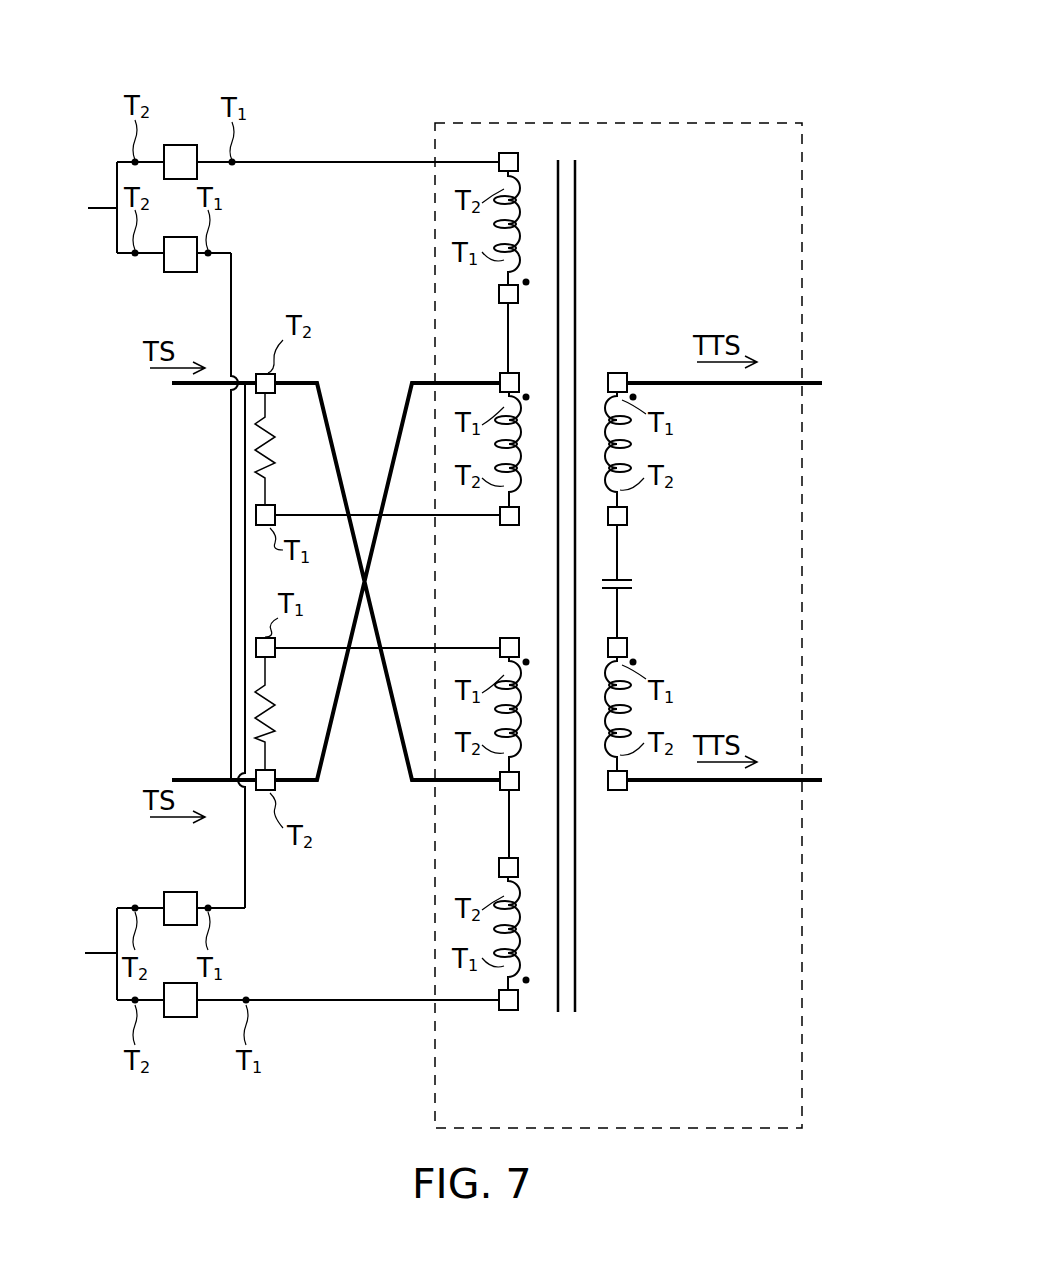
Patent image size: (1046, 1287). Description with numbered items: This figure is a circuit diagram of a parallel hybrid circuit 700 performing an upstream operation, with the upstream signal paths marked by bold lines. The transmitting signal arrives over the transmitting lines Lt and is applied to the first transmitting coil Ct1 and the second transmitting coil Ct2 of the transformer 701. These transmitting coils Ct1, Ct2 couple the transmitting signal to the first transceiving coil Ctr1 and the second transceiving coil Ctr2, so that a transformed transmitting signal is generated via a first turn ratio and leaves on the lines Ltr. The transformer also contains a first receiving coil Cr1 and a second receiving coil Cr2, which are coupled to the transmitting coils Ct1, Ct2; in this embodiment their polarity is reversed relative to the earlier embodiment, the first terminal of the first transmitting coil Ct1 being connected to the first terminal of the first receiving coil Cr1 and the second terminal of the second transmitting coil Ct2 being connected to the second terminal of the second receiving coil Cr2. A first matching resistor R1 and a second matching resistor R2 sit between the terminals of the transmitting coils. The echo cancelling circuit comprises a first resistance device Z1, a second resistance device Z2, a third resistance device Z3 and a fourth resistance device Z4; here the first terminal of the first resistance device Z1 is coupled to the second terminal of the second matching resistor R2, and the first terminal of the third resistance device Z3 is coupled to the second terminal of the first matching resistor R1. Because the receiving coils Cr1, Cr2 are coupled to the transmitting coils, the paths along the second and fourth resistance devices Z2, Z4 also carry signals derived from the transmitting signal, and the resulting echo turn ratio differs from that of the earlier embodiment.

The parallel hybrid circuit 700 is at (748, 90).
The transformer 701 is at (620, 123).
The first resistance device Z1 is at (193, 237).
The second resistance device Z2 is at (182, 145).
The third resistance device Z3 is at (193, 925).
The fourth resistance device Z4 is at (182, 1017).
The first matching resistor R1 is at (282, 449).
The second matching resistor R2 is at (282, 714).
The first receiving coil Cr1 is at (526, 268).
The second receiving coil Cr2 is at (526, 972).
The first transmitting coil Ct1 is at (526, 481).
The second transmitting coil Ct2 is at (526, 748).
The first transceiving coil Ctr1 is at (636, 447).
The second transceiving coil Ctr2 is at (636, 712).
The transmitting line Lt is at (183, 395).
The transformed line Ltr is at (768, 392).